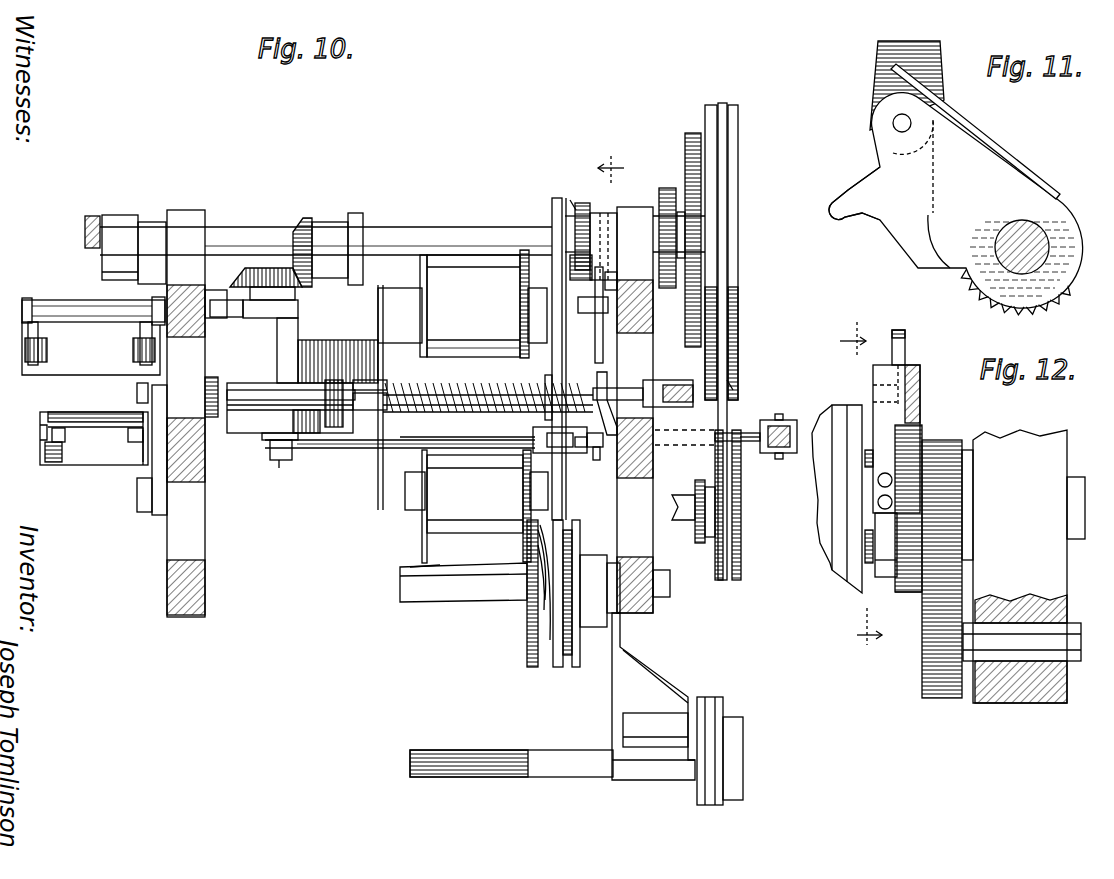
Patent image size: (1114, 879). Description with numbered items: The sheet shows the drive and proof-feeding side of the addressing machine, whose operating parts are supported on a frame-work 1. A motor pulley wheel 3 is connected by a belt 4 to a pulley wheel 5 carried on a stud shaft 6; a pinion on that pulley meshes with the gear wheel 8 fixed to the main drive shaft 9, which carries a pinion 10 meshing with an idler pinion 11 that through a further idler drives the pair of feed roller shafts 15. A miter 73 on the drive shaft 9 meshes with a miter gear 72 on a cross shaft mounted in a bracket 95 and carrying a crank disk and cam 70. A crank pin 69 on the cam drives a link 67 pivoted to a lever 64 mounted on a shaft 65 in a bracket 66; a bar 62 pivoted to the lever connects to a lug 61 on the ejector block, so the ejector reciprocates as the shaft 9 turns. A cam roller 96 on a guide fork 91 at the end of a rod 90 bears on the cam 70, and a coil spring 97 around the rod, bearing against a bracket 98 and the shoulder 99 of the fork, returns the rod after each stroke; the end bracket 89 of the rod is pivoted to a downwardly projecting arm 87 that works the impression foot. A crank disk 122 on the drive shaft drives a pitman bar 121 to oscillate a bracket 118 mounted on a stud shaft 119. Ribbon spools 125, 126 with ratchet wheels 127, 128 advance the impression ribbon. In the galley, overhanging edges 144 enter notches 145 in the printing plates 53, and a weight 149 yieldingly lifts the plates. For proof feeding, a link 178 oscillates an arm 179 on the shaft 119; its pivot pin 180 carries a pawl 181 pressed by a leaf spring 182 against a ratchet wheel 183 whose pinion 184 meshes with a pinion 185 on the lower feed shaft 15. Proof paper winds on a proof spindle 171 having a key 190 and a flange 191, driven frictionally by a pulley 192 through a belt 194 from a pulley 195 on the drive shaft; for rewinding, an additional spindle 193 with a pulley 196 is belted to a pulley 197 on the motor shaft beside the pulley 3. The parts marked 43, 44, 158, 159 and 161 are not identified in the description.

In FIG. 10, the frame-work 1 is at (655, 462).
In FIG. 10, the pulley wheel 3 is at (742, 546).
In FIG. 10, the belt 4 is at (733, 387).
In FIG. 10, the pulley wheel 5 is at (733, 296).
In FIG. 10, the stud shaft 6 is at (610, 163).
In FIG. 10, the gear wheel 8 is at (688, 139).
In FIG. 10, the main drive shaft 9 is at (487, 234).
In FIG. 10, the pinion 10 is at (668, 200).
In FIG. 12, the idler pinion 11 is at (861, 490).
In FIG. 12, the feed roller shafts 15 is at (1013, 644).
In FIG. 10, the bracket 43 is at (43, 423).
In FIG. 10, the lip 44 is at (45, 430).
In FIG. 10, the printing plates 53 is at (56, 462).
In FIG. 10, the lug 61 is at (810, 415).
In FIG. 10, the bar 62 is at (745, 430).
In FIG. 10, the lever 64 is at (522, 440).
In FIG. 10, the shaft 65 is at (553, 410).
In FIG. 10, the bracket 66 is at (600, 449).
In FIG. 10, the link 67 is at (345, 449).
In FIG. 10, the crank pin 69 is at (279, 468).
In FIG. 10, the crank disk and cam 70 is at (250, 423).
In FIG. 10, the miter gear 72 is at (302, 288).
In FIG. 10, the miter 73 is at (310, 220).
In FIG. 10, the downwardly projecting arm 87 is at (728, 434).
In FIG. 10, the end bracket 89 is at (656, 403).
In FIG. 10, the rod 90 is at (628, 390).
In FIG. 10, the guide fork 91 is at (302, 393).
In FIG. 10, the bracket 95 is at (293, 332).
In FIG. 10, the cam roller 96 is at (356, 432).
In FIG. 10, the coil spring 97 is at (447, 400).
In FIG. 10, the bracket 98 is at (606, 374).
In FIG. 10, the shoulder 99 is at (380, 406).
In FIG. 10, the bracket 118 is at (832, 504).
In FIG. 11, the stud shaft 119 is at (1043, 240).
In FIG. 12, the stud shaft 119 is at (1073, 488).
In FIG. 10, the pitman bar 121 is at (97, 206).
In FIG. 10, the crank disk 122 is at (103, 272).
In FIG. 10, the ribbon spool 125 is at (453, 280).
In FIG. 10, the ribbon spool 126 is at (423, 527).
In FIG. 10, the ratchet wheel 127 is at (525, 248).
In FIG. 10, the ratchet wheel 128 is at (523, 546).
In FIG. 10, the overhanging edges 144 is at (141, 447).
In FIG. 10, the notches 145 is at (130, 442).
In FIG. 10, the weight 149 is at (89, 362).
In FIG. 10, the rod 158 is at (603, 345).
In FIG. 10, the nut 159 is at (606, 280).
In FIG. 10, the collar 161 is at (600, 193).
In FIG. 10, the proof-winding spindle 171 is at (468, 592).
In FIG. 11, the link 178 is at (878, 58).
In FIG. 12, the link 178 is at (937, 350).
In FIG. 11, the arm 179 is at (965, 157).
In FIG. 12, the arm 179 is at (887, 561).
In FIG. 11, the pivot pin 180 is at (893, 122).
In FIG. 11, the pawl 181 is at (872, 168).
In FIG. 11, the leaf spring 182 is at (936, 119).
In FIG. 12, the leaf spring 182 is at (878, 373).
In FIG. 11, the ratchet wheel 183 is at (1033, 313).
In FIG. 12, the ratchet wheel 183 is at (905, 440).
In FIG. 12, the pinion 184 is at (958, 437).
In FIG. 12, the pinion 185 is at (935, 688).
In FIG. 10, the key 190 is at (440, 574).
In FIG. 10, the flange 191 is at (523, 651).
In FIG. 10, the pulley 192 is at (560, 666).
In FIG. 10, the additional spindle 193 is at (572, 744).
In FIG. 10, the belt 194 is at (612, 480).
In FIG. 10, the pulley 195 is at (573, 200).
In FIG. 10, the pulley 196 is at (718, 706).
In FIG. 10, the pulley 197 is at (695, 528).